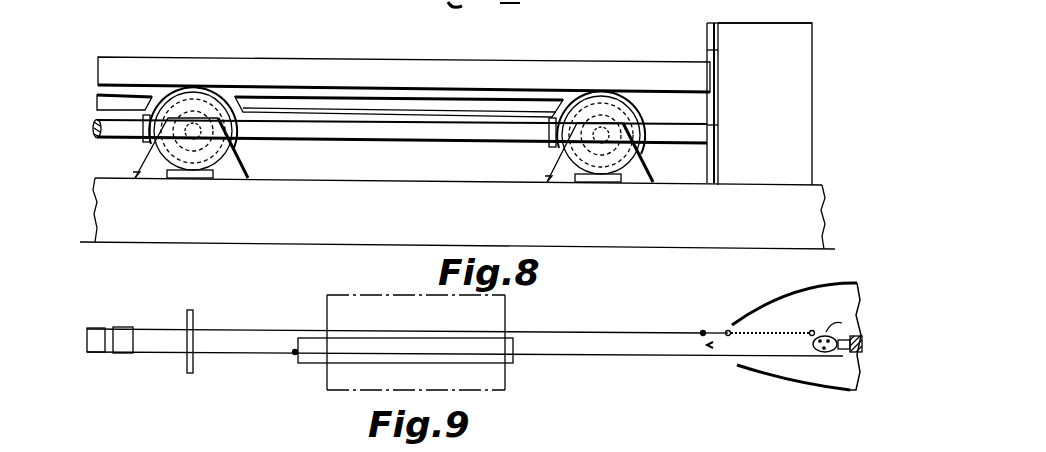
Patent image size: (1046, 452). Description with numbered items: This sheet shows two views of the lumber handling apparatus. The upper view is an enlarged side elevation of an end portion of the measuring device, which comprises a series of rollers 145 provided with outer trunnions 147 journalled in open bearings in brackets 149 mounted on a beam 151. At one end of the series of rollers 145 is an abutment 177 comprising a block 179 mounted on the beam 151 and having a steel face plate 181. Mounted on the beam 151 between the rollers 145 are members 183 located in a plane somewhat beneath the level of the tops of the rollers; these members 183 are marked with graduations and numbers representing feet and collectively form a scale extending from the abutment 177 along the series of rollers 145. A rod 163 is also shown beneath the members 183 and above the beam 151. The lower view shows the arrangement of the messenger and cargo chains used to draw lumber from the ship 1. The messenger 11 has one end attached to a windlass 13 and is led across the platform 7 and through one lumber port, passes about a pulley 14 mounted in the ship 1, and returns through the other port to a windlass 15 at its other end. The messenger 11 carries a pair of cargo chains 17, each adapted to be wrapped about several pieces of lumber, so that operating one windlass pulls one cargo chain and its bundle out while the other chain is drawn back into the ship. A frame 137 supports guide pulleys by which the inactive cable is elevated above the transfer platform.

In FIG. 9, the ship 1 is at (782, 381).
In FIG. 9, the platform 7 is at (506, 381).
In FIG. 9, the messenger 11 is at (603, 354).
In FIG. 9, the windlass 13 is at (96, 352).
In FIG. 9, the pulley 14 is at (817, 350).
In FIG. 9, the windlass 15 is at (118, 327).
In FIG. 9, the cargo chain 17 is at (321, 343).
In FIG. 9, the frame 137 is at (193, 313).
In FIG. 8, the roller 145 is at (217, 92).
In FIG. 8, the outer trunnion 147 is at (232, 154).
In FIG. 8, the bracket 149 is at (145, 163).
In FIG. 8, the beam 151 is at (368, 234).
In FIG. 8, the rod 163 is at (357, 141).
In FIG. 8, the abutment 177 is at (762, 2).
In FIG. 8, the block 179 is at (730, 30).
In FIG. 8, the steel face plate 181 is at (707, 52).
In FIG. 8, the member 183 is at (128, 100).